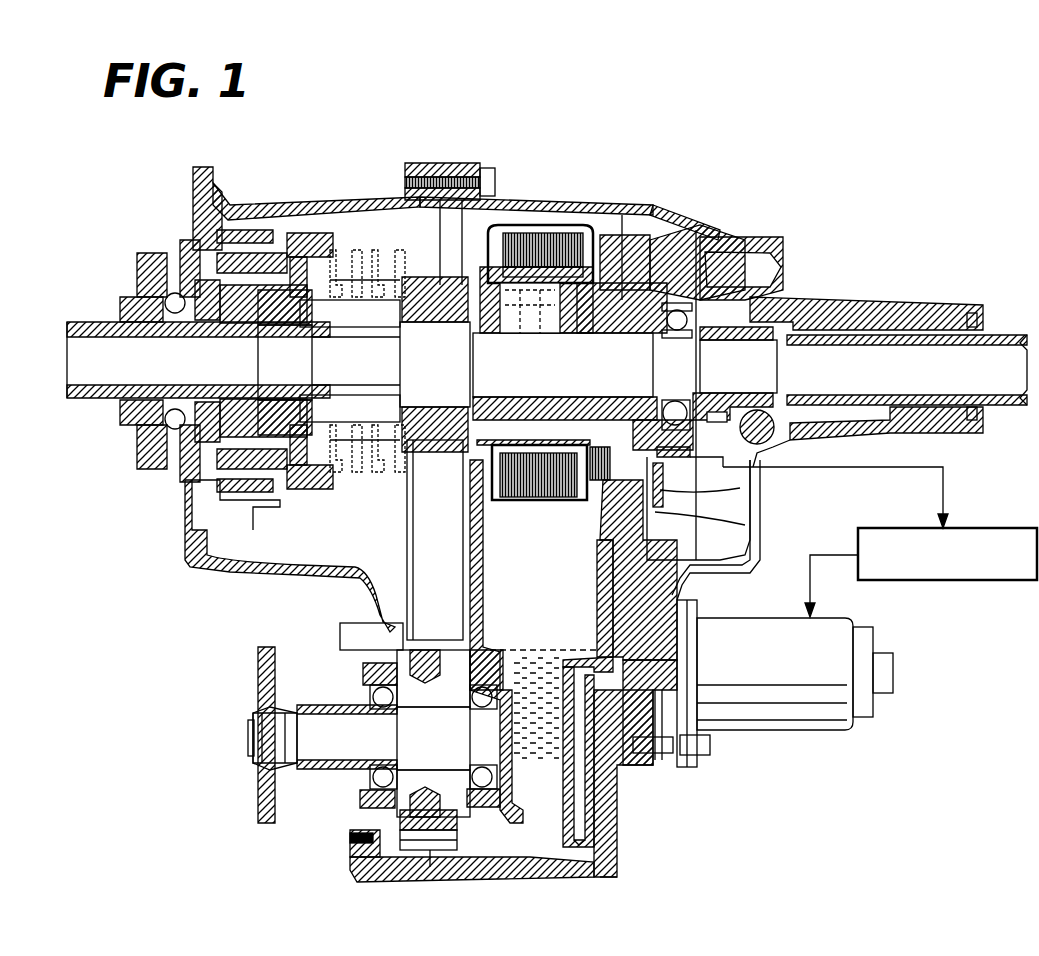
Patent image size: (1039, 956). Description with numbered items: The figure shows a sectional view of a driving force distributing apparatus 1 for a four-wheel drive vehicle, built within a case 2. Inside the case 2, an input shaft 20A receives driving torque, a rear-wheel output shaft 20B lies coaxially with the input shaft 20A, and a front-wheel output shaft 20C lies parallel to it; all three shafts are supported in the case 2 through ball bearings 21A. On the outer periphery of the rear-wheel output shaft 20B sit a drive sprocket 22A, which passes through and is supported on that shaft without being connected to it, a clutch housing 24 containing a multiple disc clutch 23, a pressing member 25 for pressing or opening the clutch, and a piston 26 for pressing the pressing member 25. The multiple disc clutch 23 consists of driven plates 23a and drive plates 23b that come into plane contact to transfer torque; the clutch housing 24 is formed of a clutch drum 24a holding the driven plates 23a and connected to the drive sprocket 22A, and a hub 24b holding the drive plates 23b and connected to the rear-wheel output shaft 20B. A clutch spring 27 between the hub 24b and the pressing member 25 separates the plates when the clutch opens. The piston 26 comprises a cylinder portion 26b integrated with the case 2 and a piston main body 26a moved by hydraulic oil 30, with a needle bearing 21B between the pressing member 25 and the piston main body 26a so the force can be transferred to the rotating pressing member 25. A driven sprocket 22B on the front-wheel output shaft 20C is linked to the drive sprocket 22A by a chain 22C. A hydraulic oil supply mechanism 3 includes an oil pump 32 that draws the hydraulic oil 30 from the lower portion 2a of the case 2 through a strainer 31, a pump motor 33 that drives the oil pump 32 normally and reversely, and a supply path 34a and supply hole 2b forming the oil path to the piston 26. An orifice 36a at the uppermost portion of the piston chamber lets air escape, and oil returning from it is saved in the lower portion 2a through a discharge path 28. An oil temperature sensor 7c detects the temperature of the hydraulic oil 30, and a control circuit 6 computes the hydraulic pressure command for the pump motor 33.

The driving force distributing apparatus 1 is at (665, 150).
The case 2 is at (300, 218).
The lower portion of the case 2a is at (613, 877).
The supply hole 2b is at (740, 488).
The hydraulic oil supply mechanism 3 is at (870, 748).
The control circuit 6 is at (962, 580).
The oil temperature sensor 7c is at (622, 415).
The input shaft 20A is at (75, 400).
The rear-wheel output shaft 20B is at (840, 355).
The front-wheel output shaft 20C is at (318, 770).
The ball bearings 21A is at (185, 265).
The needle bearing 21B is at (600, 505).
The drive sprocket 22A is at (405, 235).
The driven sprocket 22B is at (390, 870).
The chain 22C is at (413, 533).
The multiple disc clutch 23 is at (600, 161).
The driven plates 23a is at (520, 240).
The drive plates 23b is at (570, 245).
The clutch housing 24 is at (520, 131).
The clutch drum 24a is at (470, 205).
The hub 24b is at (440, 200).
The pressing member 25 is at (640, 245).
The piston 26 is at (795, 141).
The piston main body 26a is at (720, 230).
The cylinder portion 26b is at (680, 225).
The clutch spring 27 is at (696, 240).
The discharge path 28 is at (760, 250).
The hydraulic oil 30 is at (560, 860).
The strainer 31 is at (590, 820).
The oil pump 32 is at (690, 770).
The pump motor 33 is at (812, 722).
The supply path 34a is at (745, 525).
The orifice 36a is at (745, 262).